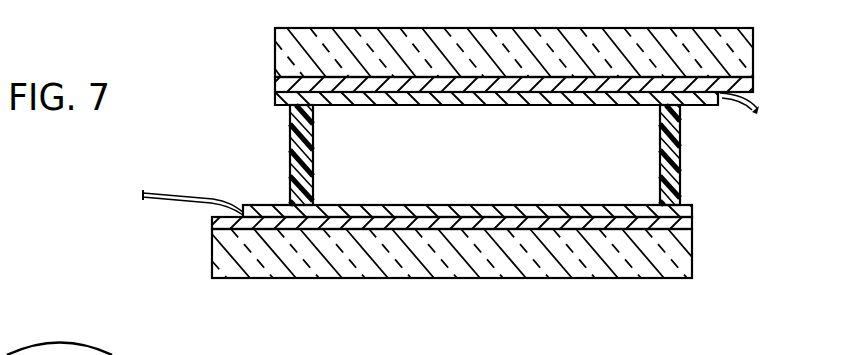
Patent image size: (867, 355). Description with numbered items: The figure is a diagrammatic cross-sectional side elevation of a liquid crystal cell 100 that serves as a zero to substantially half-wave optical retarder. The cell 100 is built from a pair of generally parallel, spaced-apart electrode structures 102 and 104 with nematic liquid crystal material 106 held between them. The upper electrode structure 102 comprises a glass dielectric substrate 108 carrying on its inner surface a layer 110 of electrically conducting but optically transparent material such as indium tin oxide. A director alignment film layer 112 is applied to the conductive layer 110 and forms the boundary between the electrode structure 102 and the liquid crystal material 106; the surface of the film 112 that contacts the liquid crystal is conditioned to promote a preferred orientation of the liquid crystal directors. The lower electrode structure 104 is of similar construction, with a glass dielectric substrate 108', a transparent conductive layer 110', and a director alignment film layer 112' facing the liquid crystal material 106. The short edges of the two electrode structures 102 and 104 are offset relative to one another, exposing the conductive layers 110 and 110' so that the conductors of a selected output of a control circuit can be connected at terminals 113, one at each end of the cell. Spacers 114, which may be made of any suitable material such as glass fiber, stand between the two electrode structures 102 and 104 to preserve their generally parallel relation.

The liquid crystal cell 100 is at (206, 279).
The electrode structure 102 is at (275, 42).
The electrode structure 104 is at (400, 279).
The nematic liquid crystal material 106 is at (460, 164).
The glass dielectric substrate 108 is at (514, 38).
The glass dielectric substrate 108' is at (415, 253).
The conductive layer 110 is at (476, 76).
The conductive layer 110' is at (417, 219).
The director alignment film layer 112 is at (458, 94).
The director alignment film layer 112' is at (437, 192).
The terminals 113 is at (164, 192).
The spacers 114 is at (313, 141).